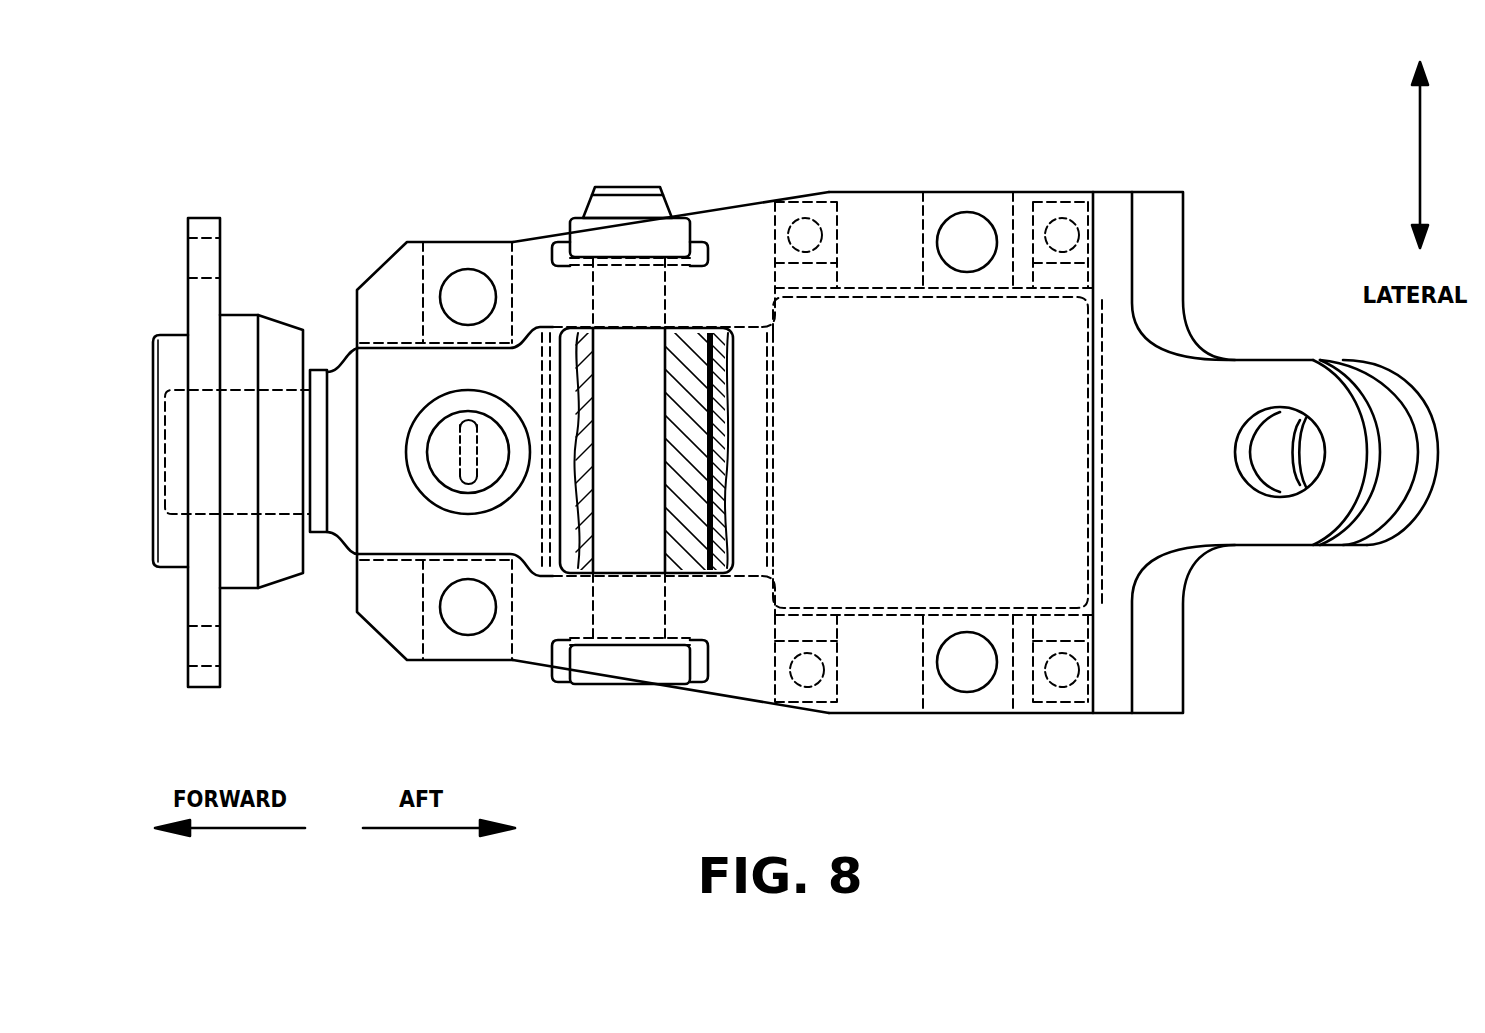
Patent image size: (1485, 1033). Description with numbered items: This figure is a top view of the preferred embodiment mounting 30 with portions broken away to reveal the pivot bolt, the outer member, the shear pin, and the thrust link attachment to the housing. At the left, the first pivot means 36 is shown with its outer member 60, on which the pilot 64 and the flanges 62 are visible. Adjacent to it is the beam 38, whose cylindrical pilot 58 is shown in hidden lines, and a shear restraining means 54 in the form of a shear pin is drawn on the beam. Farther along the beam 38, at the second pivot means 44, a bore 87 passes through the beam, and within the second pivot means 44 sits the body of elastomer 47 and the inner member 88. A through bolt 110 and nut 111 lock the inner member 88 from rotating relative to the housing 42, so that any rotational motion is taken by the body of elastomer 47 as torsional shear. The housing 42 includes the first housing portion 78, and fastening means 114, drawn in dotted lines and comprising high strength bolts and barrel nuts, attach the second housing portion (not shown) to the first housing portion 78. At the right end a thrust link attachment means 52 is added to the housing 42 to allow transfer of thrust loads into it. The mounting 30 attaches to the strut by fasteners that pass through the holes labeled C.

The mounting 30 is at (1234, 244).
The first pivot means 36 is at (312, 278).
The beam 38 is at (342, 518).
The housing 42 is at (876, 218).
The second pivot means 44 is at (736, 258).
The body of elastomer 47 is at (712, 482).
The thrust link attachment means 52 is at (1280, 522).
The shear restraining means 54 is at (443, 413).
The cylindrical pilot 58 is at (212, 388).
The outer member 60 is at (222, 297).
The flanges 62 is at (205, 218).
The pilot 64 is at (173, 555).
The first housing portion 78 is at (1163, 664).
The bore 87 is at (722, 377).
The inner member 88 is at (683, 547).
The through bolt 110 is at (583, 678).
The nut 111 is at (575, 225).
The fastening means 114 is at (805, 215).
The holes C is at (466, 268).